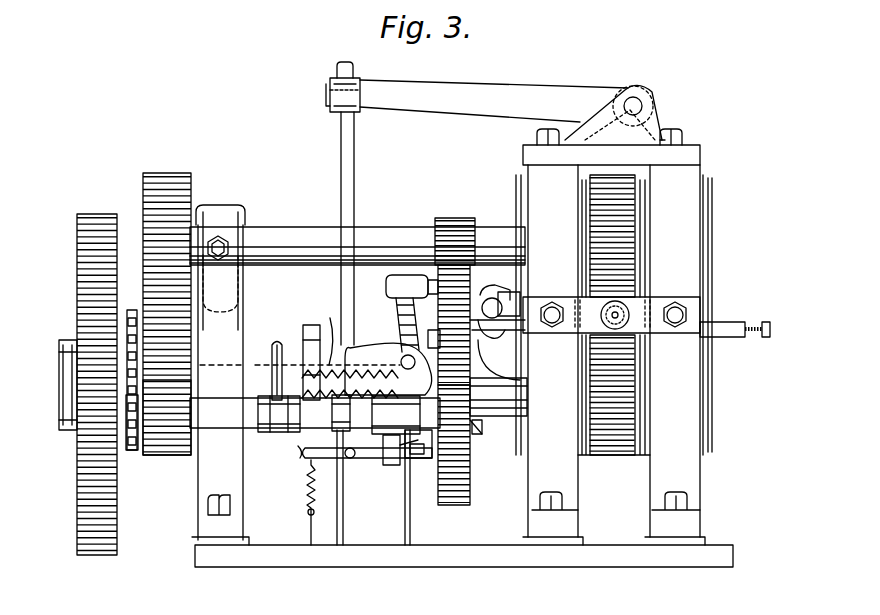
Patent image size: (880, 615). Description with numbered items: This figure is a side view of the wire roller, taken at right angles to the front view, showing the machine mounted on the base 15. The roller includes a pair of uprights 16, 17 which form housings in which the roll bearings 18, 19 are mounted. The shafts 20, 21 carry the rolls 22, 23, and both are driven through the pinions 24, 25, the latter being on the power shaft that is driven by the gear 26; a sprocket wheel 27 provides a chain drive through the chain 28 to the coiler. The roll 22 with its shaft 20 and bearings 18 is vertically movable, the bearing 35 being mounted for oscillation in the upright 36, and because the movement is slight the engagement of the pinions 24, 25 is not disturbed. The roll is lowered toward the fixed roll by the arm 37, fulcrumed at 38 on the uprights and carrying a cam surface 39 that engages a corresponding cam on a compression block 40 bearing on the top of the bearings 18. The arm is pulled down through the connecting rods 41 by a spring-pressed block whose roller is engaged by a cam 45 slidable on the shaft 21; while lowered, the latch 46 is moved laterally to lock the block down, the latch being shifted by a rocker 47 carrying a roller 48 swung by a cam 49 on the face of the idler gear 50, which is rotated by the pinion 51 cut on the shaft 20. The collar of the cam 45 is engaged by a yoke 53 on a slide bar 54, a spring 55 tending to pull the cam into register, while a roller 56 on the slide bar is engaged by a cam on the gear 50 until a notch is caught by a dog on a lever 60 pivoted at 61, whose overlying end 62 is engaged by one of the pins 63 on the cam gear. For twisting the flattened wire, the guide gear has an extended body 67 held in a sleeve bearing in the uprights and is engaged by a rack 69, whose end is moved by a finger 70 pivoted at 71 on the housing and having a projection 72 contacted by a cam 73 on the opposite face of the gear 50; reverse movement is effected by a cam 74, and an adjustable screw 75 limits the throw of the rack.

The base 15 is at (466, 545).
The upright 16 is at (701, 474).
The upright 17 is at (578, 484).
The roll bearing 18 is at (706, 195).
The roll bearing 19 is at (710, 398).
The shaft 20 is at (300, 227).
The shaft 21 is at (315, 368).
The roll 22 is at (613, 236).
The roll 23 is at (614, 395).
The pinion 24 is at (172, 173).
The pinion 25 is at (180, 455).
The gear 26 is at (77, 254).
The sprocket wheel 27 is at (126, 330).
The chain 28 is at (135, 455).
The bearing 35 is at (226, 206).
The upright 36 is at (243, 300).
The arm 37 is at (520, 82).
The fulcrum 38 is at (640, 104).
The cam surface 39 is at (583, 122).
The compression block 40 is at (667, 125).
The connecting rod 41 is at (354, 160).
The cam 45 is at (303, 335).
The latch 46 is at (424, 458).
The rocker 47 is at (396, 322).
The roller 48 is at (392, 288).
The cam 49 is at (432, 272).
The idler gear 50 is at (470, 482).
The pinion 51 is at (452, 218).
The yoke 53 is at (275, 346).
The slide bar 54 is at (262, 432).
The spring 55 is at (362, 378).
The roller 56 is at (396, 415).
The lever 60 is at (367, 460).
The pivot 61 is at (350, 460).
The overlying end 62 is at (406, 458).
The pin 63 is at (428, 338).
The extended body 67 is at (614, 333).
The rack 69 is at (628, 305).
The finger 70 is at (498, 378).
The pivot 71 is at (490, 298).
The projection 72 is at (482, 312).
The cam 73 is at (505, 300).
The cam 74 is at (478, 434).
The adjustable screw 75 is at (758, 322).